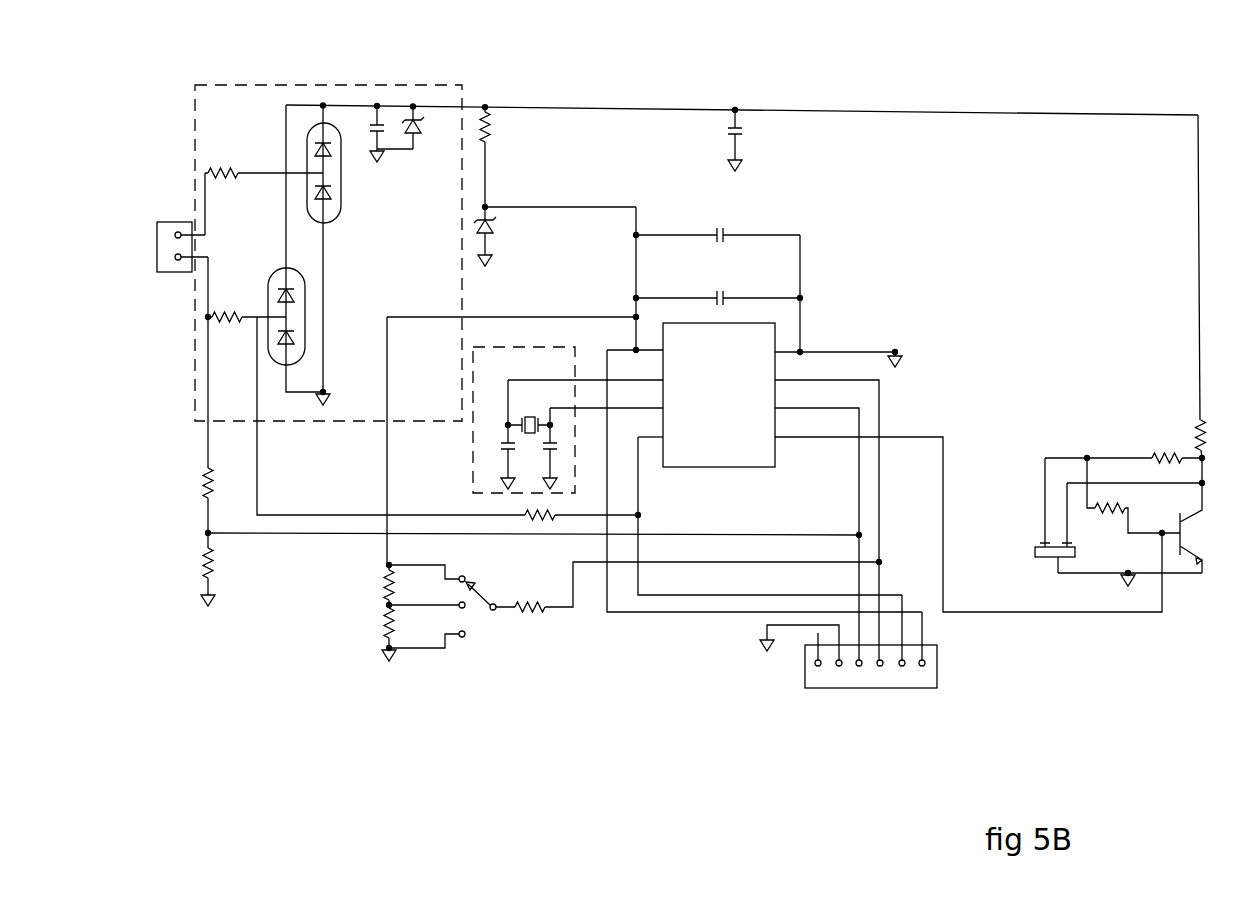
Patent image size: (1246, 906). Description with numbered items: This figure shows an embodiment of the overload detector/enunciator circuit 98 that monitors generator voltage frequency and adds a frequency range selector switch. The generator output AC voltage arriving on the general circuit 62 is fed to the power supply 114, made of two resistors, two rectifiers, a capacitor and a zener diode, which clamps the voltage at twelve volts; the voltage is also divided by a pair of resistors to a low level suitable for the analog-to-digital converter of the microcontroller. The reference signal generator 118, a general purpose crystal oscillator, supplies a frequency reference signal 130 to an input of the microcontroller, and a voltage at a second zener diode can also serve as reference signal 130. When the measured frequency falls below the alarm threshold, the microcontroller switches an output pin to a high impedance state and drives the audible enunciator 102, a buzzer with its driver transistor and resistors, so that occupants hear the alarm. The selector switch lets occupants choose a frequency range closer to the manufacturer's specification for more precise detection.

The detector/enunciator circuit 98 is at (875, 68).
The power supply 114 is at (303, 84).
The general circuit 62 is at (165, 272).
The reference signal generator 118 is at (538, 346).
The frequency reference signal 130 is at (588, 378).
The audible enunciator 102 is at (1040, 560).